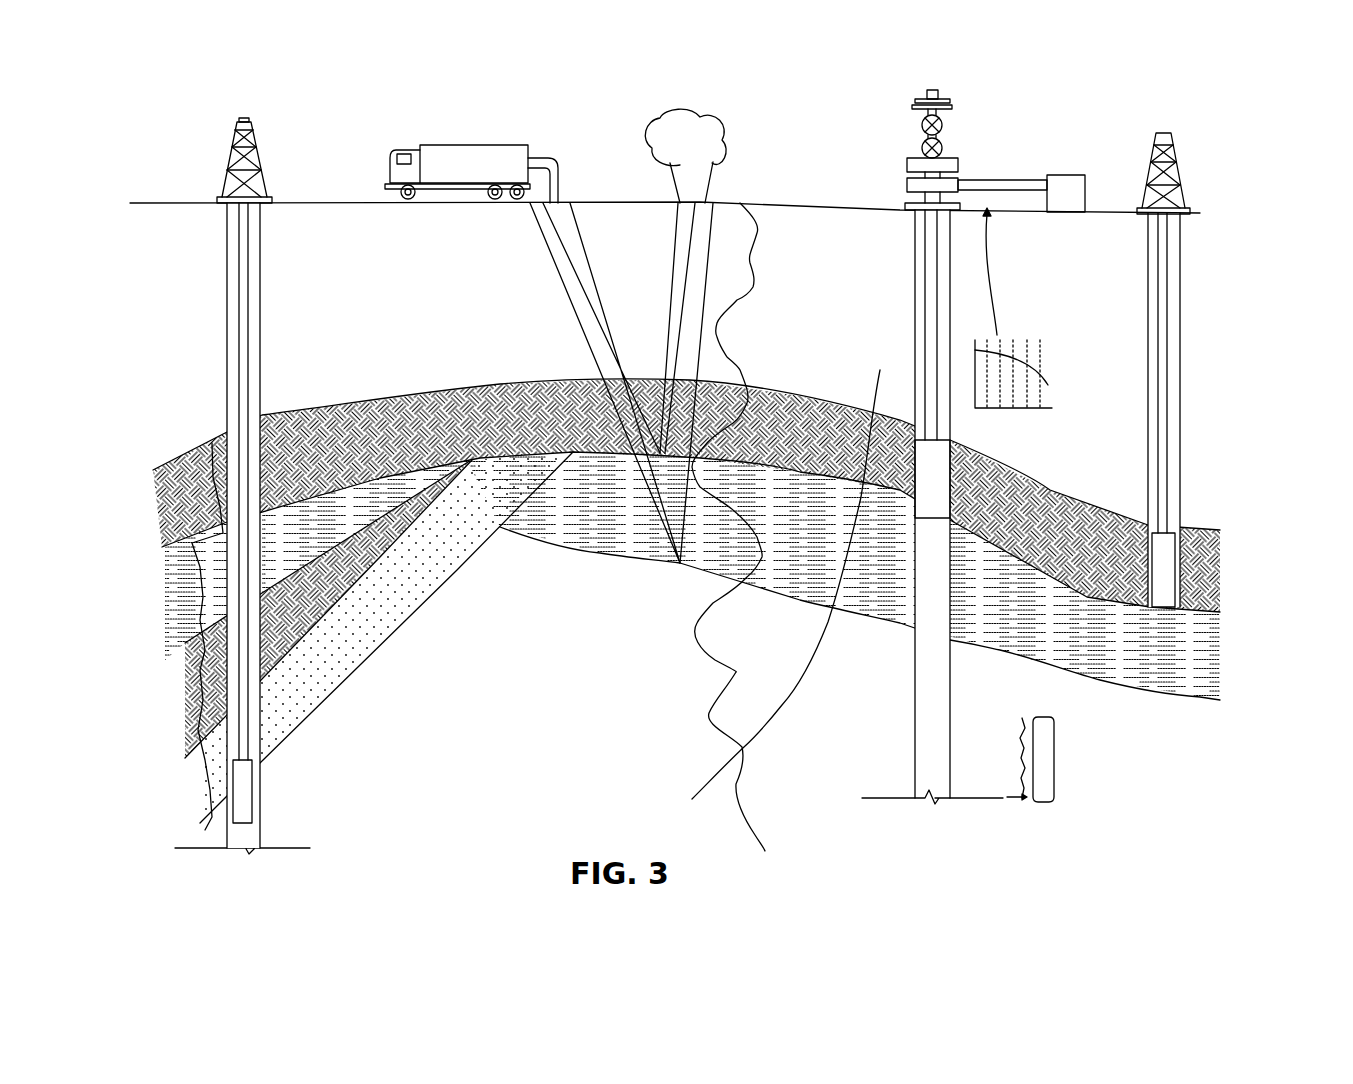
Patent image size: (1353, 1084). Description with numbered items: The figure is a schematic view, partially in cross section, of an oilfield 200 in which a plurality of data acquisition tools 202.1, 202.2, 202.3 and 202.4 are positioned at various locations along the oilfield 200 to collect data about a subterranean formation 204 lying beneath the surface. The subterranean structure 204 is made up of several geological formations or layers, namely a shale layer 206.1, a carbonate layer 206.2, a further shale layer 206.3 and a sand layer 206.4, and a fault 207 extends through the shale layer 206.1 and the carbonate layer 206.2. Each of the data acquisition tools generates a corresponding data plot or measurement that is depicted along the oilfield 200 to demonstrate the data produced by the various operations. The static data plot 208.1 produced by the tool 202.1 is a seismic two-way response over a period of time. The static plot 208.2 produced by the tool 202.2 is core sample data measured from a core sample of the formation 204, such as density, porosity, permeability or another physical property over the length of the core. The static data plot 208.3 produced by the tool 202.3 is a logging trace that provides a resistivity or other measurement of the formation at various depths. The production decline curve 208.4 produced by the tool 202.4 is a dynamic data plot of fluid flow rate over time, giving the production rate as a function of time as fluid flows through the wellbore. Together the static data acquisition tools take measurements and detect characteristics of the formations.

The oilfield 200 is at (1128, 140).
The data acquisition tool 202.1 is at (442, 142).
The data acquisition tool 202.2 is at (1178, 573).
The data acquisition tool 202.3 is at (260, 796).
The data acquisition tool 202.4 is at (950, 495).
The subterranean formation 204 is at (559, 644).
The shale layer 206.1 is at (369, 453).
The carbonate layer 206.2 is at (309, 543).
The shale layer 206.3 is at (355, 573).
The sand layer 206.4 is at (399, 611).
The fault 207 is at (880, 380).
The static data plot 208.1 is at (723, 686).
The static data plot 208.2 is at (1022, 730).
The static data plot 208.3 is at (204, 602).
The production decline curve 208.4 is at (1013, 408).